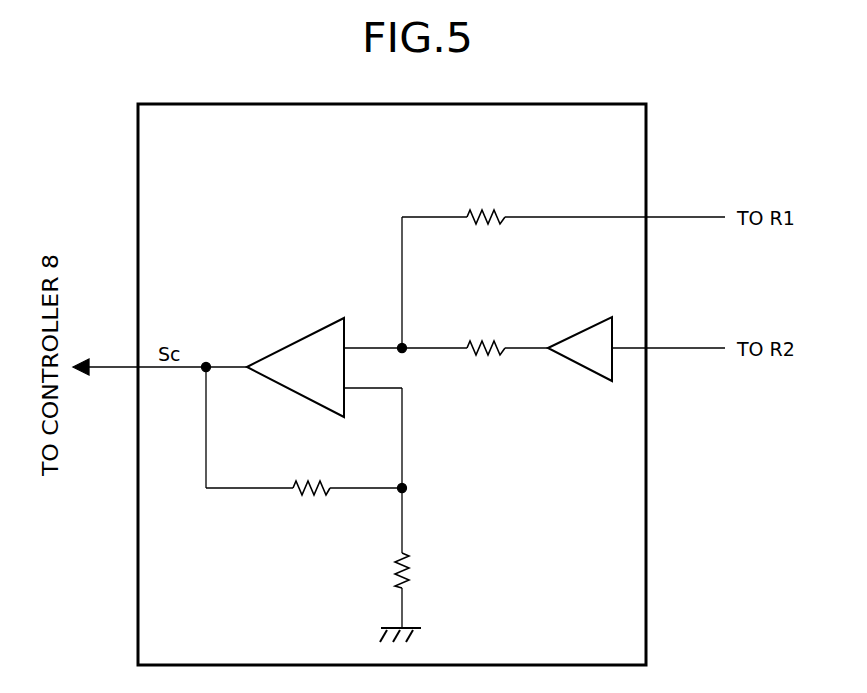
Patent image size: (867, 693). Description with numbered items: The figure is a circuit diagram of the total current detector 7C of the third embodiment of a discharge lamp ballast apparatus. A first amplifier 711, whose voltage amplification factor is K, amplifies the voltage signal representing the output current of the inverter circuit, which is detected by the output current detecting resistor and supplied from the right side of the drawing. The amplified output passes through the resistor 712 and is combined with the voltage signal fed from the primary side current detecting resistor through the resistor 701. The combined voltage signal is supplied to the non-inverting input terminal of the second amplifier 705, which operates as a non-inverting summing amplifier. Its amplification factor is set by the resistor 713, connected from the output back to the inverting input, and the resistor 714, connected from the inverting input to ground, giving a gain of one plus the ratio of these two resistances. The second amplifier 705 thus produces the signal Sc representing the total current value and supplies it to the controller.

The total current detector 7C is at (251, 104).
The resistor 701 is at (486, 202).
The second amplifier 705 is at (288, 337).
The first amplifier 711 is at (578, 326).
The resistor 712 is at (486, 328).
The resistor 713 is at (313, 475).
The resistor 714 is at (385, 575).